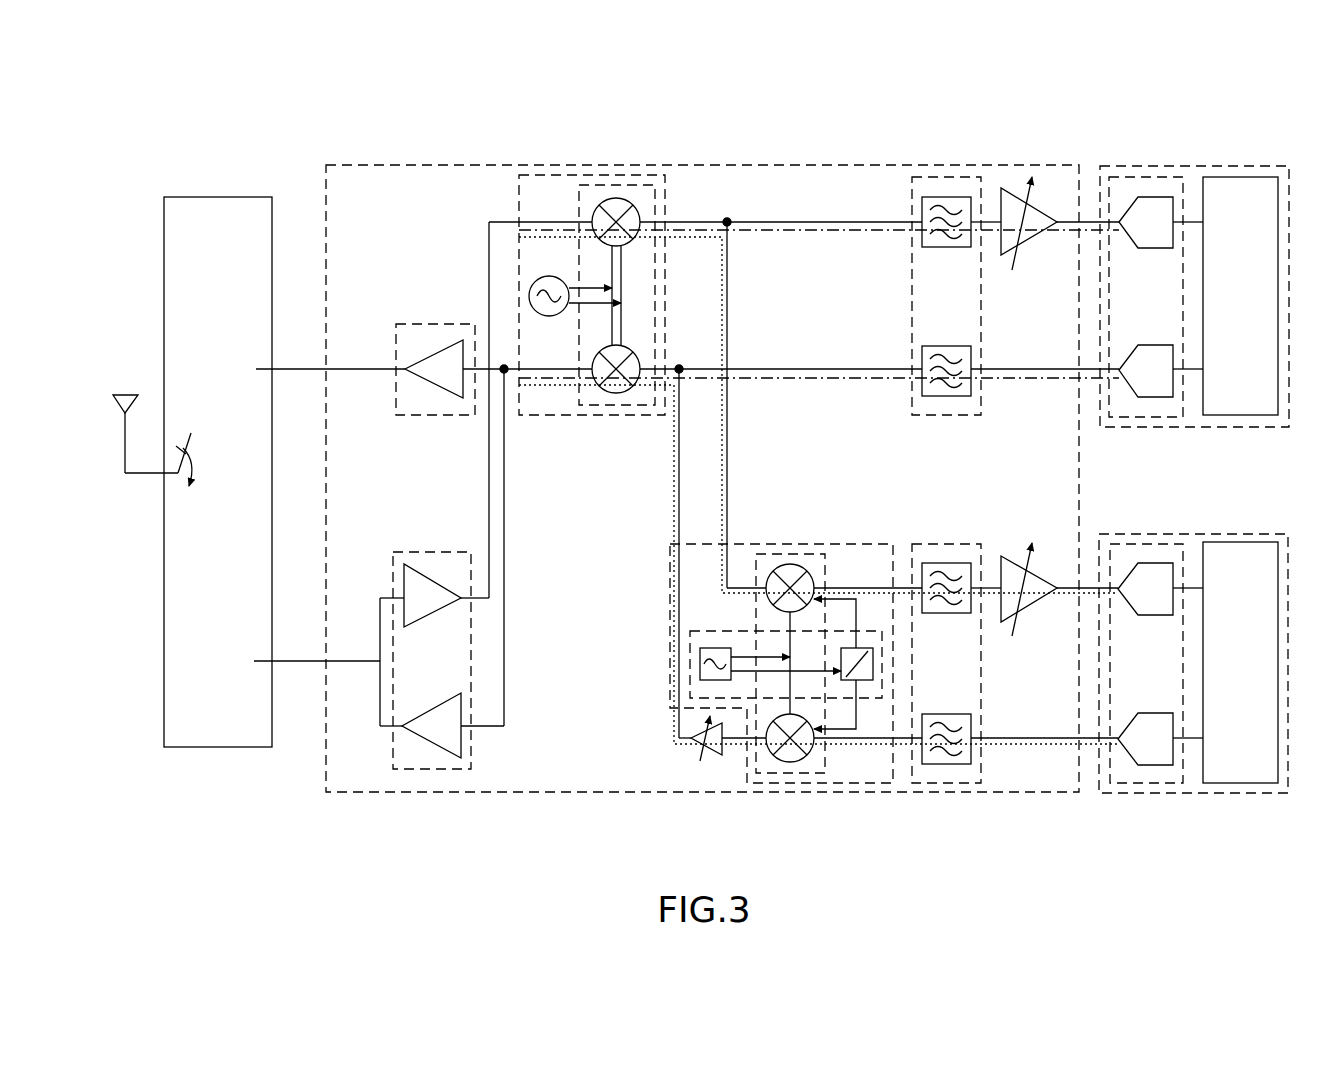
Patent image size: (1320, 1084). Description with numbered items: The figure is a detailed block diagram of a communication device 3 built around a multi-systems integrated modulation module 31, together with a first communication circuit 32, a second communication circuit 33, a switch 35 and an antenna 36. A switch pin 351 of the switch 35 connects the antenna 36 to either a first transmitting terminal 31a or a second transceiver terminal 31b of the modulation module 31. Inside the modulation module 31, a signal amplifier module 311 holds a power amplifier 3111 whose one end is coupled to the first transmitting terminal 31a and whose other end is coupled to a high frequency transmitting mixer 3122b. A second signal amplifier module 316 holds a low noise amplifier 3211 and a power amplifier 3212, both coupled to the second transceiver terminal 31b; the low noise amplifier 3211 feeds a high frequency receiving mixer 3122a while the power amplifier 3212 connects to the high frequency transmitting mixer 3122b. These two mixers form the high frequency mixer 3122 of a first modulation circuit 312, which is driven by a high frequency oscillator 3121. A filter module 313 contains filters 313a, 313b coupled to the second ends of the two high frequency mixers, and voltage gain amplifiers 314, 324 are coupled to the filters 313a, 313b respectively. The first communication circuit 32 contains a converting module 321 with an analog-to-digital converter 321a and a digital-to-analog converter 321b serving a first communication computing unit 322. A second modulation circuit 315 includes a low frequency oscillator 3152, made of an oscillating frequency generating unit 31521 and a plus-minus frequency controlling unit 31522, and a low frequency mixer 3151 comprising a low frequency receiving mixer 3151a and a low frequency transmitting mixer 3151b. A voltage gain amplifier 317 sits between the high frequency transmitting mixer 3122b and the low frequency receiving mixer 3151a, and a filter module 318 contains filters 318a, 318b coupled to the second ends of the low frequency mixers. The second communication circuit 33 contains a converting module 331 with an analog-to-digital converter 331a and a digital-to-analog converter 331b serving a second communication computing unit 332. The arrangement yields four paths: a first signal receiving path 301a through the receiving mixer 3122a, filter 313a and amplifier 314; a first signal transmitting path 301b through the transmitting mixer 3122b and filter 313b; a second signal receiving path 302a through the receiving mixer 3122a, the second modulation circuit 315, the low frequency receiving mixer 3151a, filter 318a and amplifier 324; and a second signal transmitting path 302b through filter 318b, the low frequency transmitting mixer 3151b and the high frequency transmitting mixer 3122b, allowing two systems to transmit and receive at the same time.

The communication device 3 is at (103, 113).
The switch 35 is at (216, 197).
The antenna 36 is at (124, 395).
The switch pin 351 is at (176, 461).
The modulation module 31 is at (381, 165).
The first transmitting terminal 31a is at (322, 369).
The second transceiver terminal 31b is at (380, 661).
The signal amplifier module 311 is at (435, 324).
The power amplifier 3111 is at (446, 398).
The first modulation circuit 312 is at (537, 175).
The high frequency oscillator 3121 is at (540, 282).
The high frequency mixer 3122 is at (600, 185).
The high frequency receiving mixer 3122a is at (625, 198).
The high frequency transmitting mixer 3122b is at (593, 386).
The filter module 313 is at (917, 177).
The filter 313a is at (957, 197).
The filter 313b is at (948, 346).
The voltage gain amplifier 314 is at (1038, 255).
The first signal receiving path 301a is at (772, 232).
The first signal transmitting path 301b is at (856, 380).
The second signal receiving path 302a is at (722, 450).
The second signal transmitting path 302b is at (674, 500).
The first communication circuit 32 is at (1273, 166).
The digital-to-analog converting module 321 is at (1128, 177).
The analog-to-digital converter 321a is at (1172, 197).
The digital-to-analog converter 321b is at (1157, 345).
The first communication computing unit 322 is at (1232, 177).
The signal amplifier module 316 is at (430, 770).
The low noise amplifier 3211 is at (447, 587).
The power amplifier 3212 is at (426, 721).
The second modulation circuit 315 is at (670, 577).
The low frequency mixer 3151 is at (780, 554).
The low frequency receiving mixer 3151a is at (793, 566).
The low frequency transmitting mixer 3151b is at (790, 764).
The low frequency oscillator 3152 is at (690, 638).
The oscillating frequency generating unit 31521 is at (700, 672).
The plus-minus frequency controlling unit 31522 is at (868, 682).
The voltage gain amplifier 317 is at (710, 762).
The filter module 318 is at (950, 544).
The filter 318a is at (948, 613).
The filter 318b is at (951, 764).
The voltage gain amplifier 324 is at (1040, 622).
The second communication circuit 33 is at (1248, 534).
The digital-to-analog converting module 331 is at (1127, 544).
The analog-to-digital converter 331a is at (1171, 563).
The digital-to-analog converter 331b is at (1157, 765).
The second communication computing unit 332 is at (1241, 783).